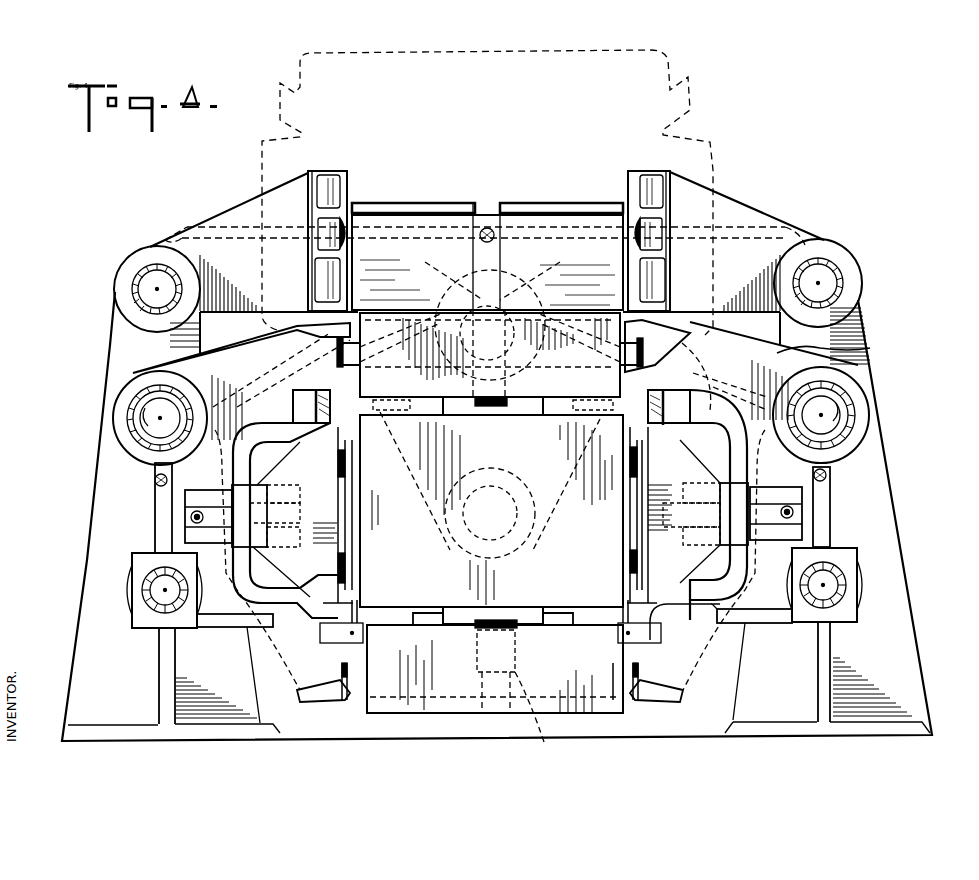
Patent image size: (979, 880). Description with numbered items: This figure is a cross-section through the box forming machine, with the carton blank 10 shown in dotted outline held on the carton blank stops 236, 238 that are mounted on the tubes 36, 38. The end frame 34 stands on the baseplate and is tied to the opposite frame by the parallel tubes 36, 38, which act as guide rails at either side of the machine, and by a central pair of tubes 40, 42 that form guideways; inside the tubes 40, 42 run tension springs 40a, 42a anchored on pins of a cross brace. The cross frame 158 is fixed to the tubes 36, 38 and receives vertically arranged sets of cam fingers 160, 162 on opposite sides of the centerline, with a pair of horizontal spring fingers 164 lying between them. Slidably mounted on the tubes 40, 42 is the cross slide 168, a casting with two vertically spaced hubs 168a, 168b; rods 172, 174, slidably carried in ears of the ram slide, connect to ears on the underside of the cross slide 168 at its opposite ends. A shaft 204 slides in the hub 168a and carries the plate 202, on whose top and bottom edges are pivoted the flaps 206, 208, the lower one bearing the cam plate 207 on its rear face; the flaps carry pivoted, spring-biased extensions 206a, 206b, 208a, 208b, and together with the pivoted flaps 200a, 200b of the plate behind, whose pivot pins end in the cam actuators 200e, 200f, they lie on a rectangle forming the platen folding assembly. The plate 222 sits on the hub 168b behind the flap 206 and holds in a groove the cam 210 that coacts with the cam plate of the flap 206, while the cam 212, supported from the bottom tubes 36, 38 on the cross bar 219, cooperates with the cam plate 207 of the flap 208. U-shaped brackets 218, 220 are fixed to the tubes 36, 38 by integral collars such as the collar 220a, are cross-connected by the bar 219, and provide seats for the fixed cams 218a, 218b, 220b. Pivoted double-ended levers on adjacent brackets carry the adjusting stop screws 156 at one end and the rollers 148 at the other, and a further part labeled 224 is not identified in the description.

The carton blank 10 is at (713, 142).
The end frame 34 is at (876, 487).
The tube 36 is at (135, 289).
The tube 38 is at (845, 285).
The tube 40 is at (127, 420).
The tension spring 40a is at (147, 410).
The tube 42 is at (868, 415).
The tension spring 42a is at (855, 400).
The roller 148 is at (308, 512).
The adjusting stop screw 156 is at (190, 516).
The cross frame 158 is at (745, 212).
The cam fingers 160 is at (320, 272).
The cam fingers 162 is at (652, 270).
The spring fingers 164 is at (515, 203).
The cross slide 168 is at (870, 350).
The hub 168a is at (538, 540).
The hub 168b is at (540, 298).
The rod 172 is at (155, 480).
The rod 174 is at (828, 476).
The flap 200a is at (697, 505).
The flap 200b is at (285, 504).
The cam actuator 200e is at (330, 640).
The cam actuator 200f is at (690, 640).
The plate 202 is at (491, 511).
The shaft 204 is at (530, 480).
The flap 206 is at (491, 361).
The extension 206a is at (712, 336).
The extension 206b is at (262, 327).
The cam plate 207 is at (545, 746).
The flap 208 is at (495, 669).
The extension 208a is at (666, 695).
The extension 208b is at (300, 692).
The cam 210 is at (490, 414).
The cam 212 is at (505, 612).
The bracket 218 is at (222, 452).
The fixed cam 218a is at (356, 458).
The fixed cam 218b is at (365, 615).
The bar 219 is at (690, 667).
The bracket 220 is at (760, 455).
The integral collar 220a is at (617, 465).
The fixed cam 220b is at (640, 615).
The plate 222 is at (487, 256).
The cam disc 224 is at (470, 295).
The carton blank stop 236 is at (223, 622).
The carton blank stop 238 is at (757, 622).